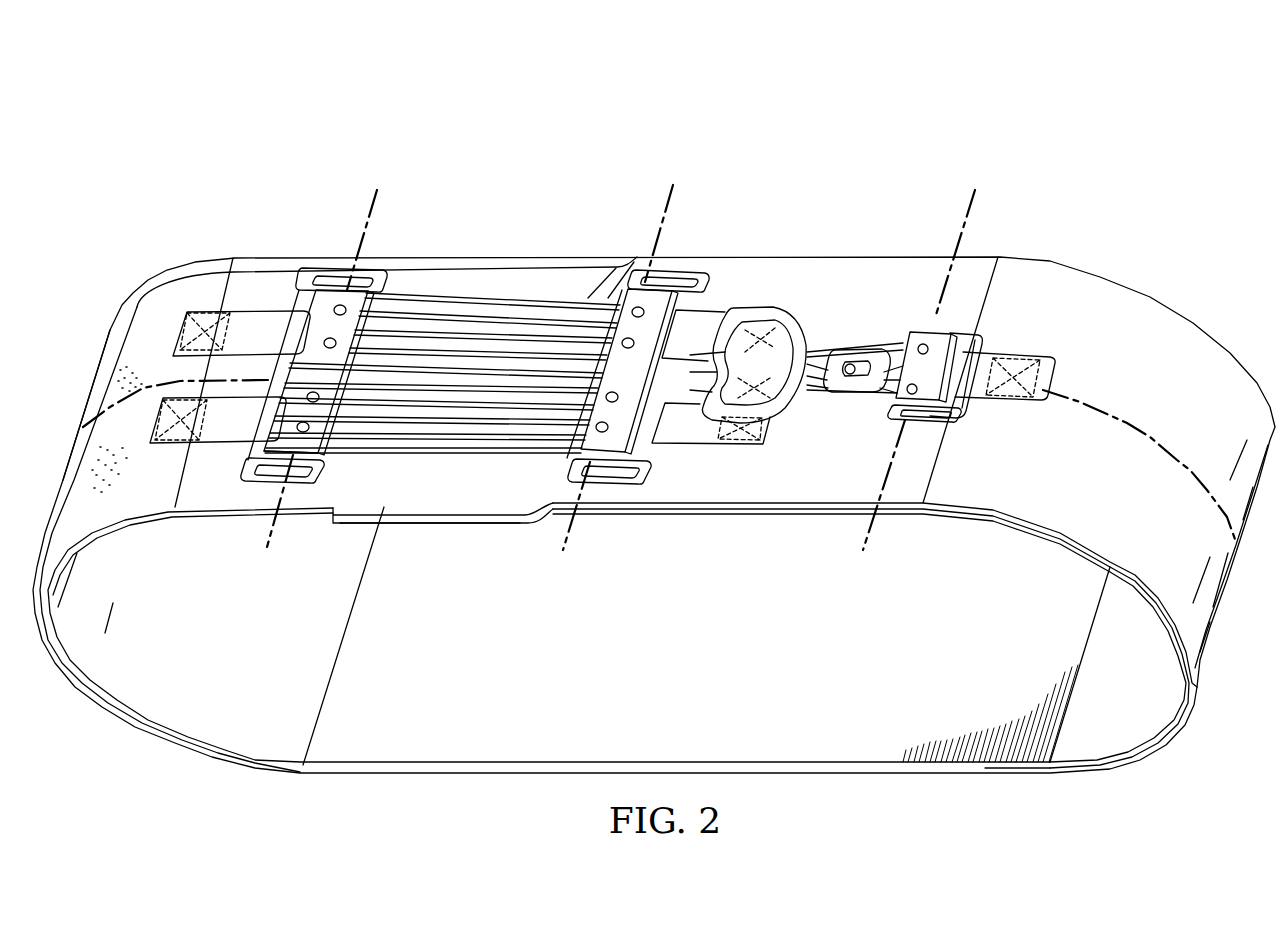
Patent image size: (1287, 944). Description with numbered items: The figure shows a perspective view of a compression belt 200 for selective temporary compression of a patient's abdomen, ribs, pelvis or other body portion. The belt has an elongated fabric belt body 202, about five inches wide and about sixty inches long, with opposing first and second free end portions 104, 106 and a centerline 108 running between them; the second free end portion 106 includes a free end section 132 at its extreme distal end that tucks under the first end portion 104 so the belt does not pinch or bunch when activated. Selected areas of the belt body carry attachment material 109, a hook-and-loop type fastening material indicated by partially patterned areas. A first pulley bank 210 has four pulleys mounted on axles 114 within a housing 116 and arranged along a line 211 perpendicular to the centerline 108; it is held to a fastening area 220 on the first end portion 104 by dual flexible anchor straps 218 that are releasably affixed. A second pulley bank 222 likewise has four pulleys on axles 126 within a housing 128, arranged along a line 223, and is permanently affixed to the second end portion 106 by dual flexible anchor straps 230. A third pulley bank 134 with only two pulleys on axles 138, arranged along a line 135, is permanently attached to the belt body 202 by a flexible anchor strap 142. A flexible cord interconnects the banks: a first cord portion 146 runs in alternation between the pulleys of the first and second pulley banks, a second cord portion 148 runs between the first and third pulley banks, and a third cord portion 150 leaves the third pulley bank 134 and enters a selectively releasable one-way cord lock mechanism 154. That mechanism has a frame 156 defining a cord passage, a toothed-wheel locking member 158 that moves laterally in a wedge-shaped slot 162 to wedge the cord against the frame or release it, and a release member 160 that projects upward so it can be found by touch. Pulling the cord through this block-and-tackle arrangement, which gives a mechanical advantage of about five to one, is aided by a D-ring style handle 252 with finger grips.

The compression belt 200 is at (855, 130).
The belt body 202 is at (1172, 312).
The first free end portion 104 is at (148, 517).
The second free end portion 106 is at (505, 529).
The centerline 108 is at (1160, 443).
The attachment material 109 is at (124, 380).
The axles 114 is at (300, 430).
The housing 116 is at (320, 290).
The axles 126 is at (634, 308).
The housing 128 is at (648, 455).
The free end section 132 is at (435, 525).
The third pulley bank 134 is at (962, 312).
The line 135 is at (866, 550).
The axles 138 is at (918, 392).
The flexible anchor strap 142 is at (1042, 368).
The first cord portion 146 is at (497, 287).
The second cord portion 148 is at (770, 468).
The third cord portion 150 is at (817, 373).
The cord lock mechanism 154 is at (841, 386).
The frame 156 is at (895, 350).
The locking member 158 is at (870, 360).
The release member 160 is at (847, 358).
The wedge-shaped slot 162 is at (870, 378).
The first pulley bank 210 is at (352, 288).
The line 211 is at (270, 548).
The flexible anchor straps 218 is at (210, 312).
The fastening area 220 is at (210, 473).
The second pulley bank 222 is at (660, 300).
The line 223 is at (567, 550).
The flexible anchor straps 230 is at (713, 320).
The handle 252 is at (787, 320).